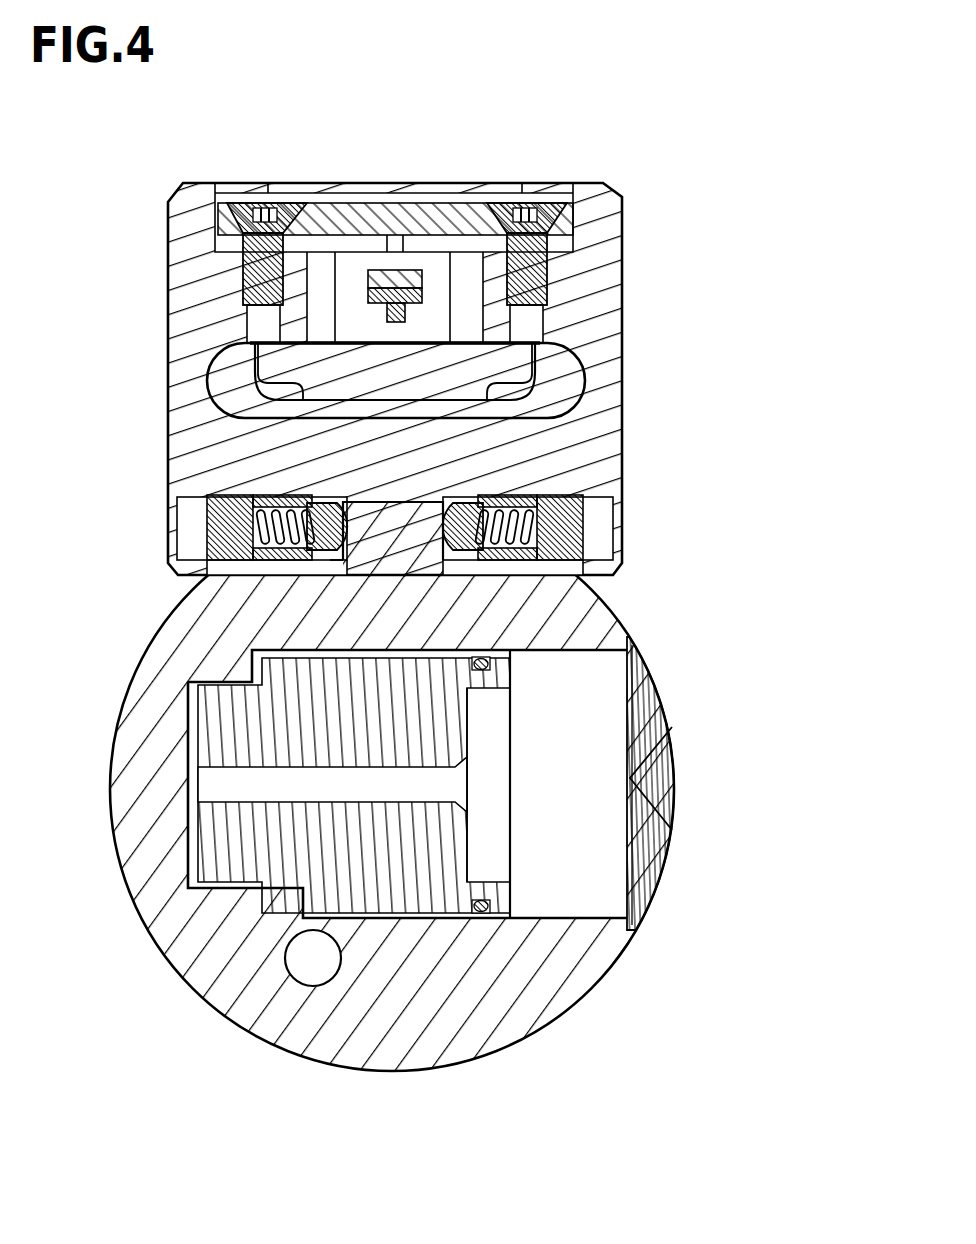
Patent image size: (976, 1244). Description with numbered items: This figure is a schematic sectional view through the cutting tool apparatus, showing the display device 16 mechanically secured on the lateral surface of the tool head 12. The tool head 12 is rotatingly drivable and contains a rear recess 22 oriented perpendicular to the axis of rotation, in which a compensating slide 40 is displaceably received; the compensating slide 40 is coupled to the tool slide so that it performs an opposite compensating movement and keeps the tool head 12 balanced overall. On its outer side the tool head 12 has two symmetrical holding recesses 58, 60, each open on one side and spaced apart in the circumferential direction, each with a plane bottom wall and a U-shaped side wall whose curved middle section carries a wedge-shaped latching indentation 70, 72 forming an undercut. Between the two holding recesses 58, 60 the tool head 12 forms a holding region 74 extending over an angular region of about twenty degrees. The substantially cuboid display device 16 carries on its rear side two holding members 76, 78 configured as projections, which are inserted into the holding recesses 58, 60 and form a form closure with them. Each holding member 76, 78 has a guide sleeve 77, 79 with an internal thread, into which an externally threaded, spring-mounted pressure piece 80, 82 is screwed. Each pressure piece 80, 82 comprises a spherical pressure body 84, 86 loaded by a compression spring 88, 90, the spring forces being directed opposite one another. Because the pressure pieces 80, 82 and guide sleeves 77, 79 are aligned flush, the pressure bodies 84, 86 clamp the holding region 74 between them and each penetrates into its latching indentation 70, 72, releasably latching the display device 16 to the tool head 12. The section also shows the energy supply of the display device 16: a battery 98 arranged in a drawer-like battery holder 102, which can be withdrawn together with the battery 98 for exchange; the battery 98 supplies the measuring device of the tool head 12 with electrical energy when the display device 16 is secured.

The tool head 12 is at (155, 970).
The display device 16 is at (626, 177).
The rear recess 22 is at (530, 913).
The compensating slide 40 is at (400, 898).
The holding recess 58 is at (640, 652).
The holding recess 60 is at (330, 565).
The latching indentation 70 is at (462, 554).
The latching indentation 72 is at (270, 562).
The holding region 74 is at (395, 500).
The holding member 76 is at (641, 500).
The guide sleeve 77 is at (600, 563).
The holding member 78 is at (150, 504).
The guide sleeve 79 is at (176, 562).
The pressure piece 80 is at (613, 531).
The pressure piece 82 is at (190, 532).
The pressure body 84 is at (490, 495).
The pressure body 86 is at (325, 512).
The compression spring 88 is at (455, 503).
The compression spring 90 is at (275, 497).
The battery 98 is at (497, 362).
The battery holder 102 is at (565, 382).